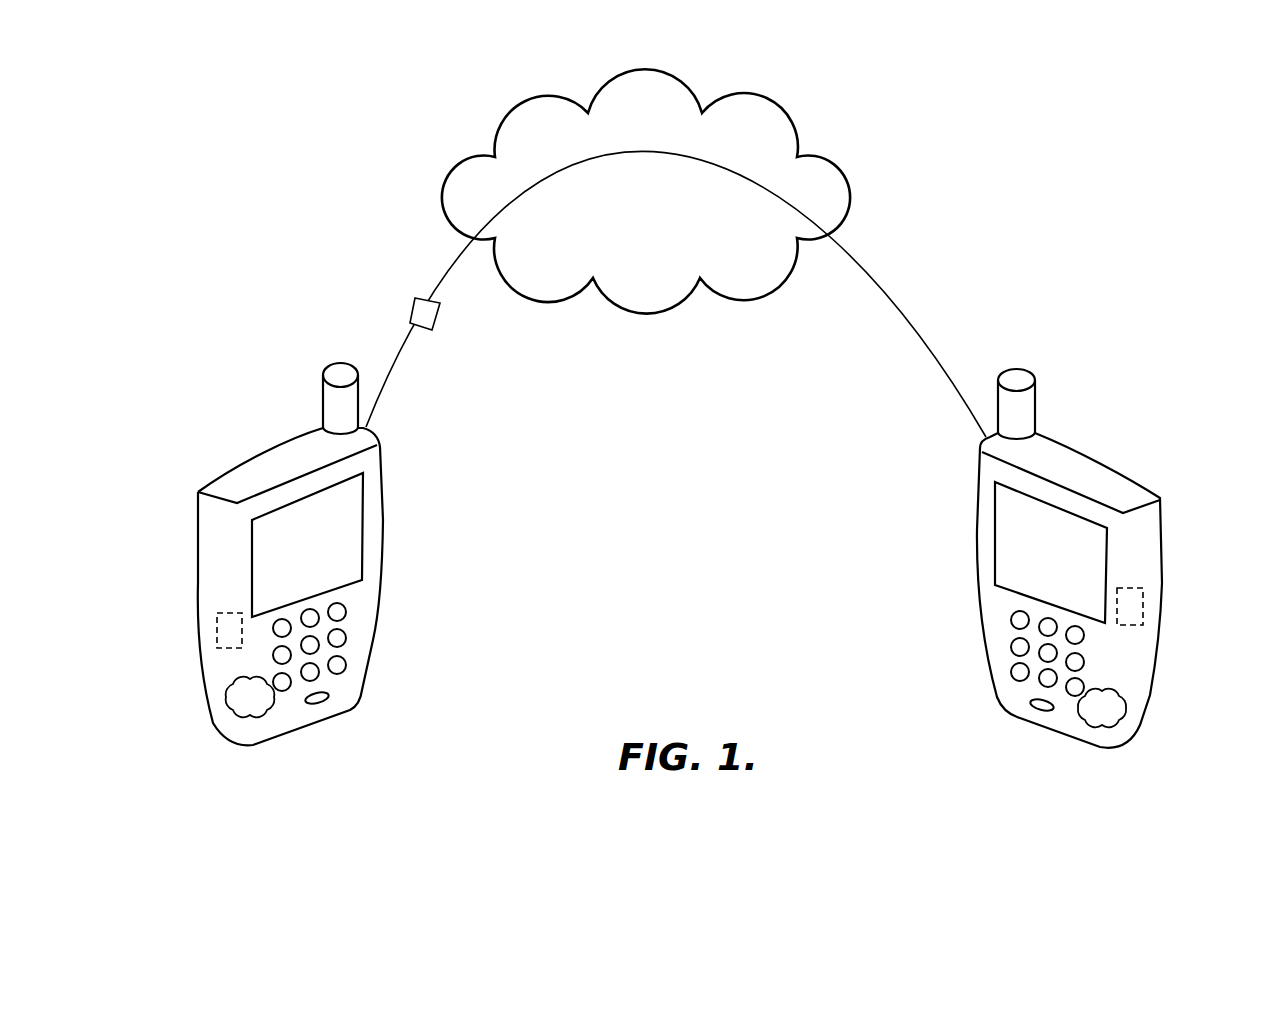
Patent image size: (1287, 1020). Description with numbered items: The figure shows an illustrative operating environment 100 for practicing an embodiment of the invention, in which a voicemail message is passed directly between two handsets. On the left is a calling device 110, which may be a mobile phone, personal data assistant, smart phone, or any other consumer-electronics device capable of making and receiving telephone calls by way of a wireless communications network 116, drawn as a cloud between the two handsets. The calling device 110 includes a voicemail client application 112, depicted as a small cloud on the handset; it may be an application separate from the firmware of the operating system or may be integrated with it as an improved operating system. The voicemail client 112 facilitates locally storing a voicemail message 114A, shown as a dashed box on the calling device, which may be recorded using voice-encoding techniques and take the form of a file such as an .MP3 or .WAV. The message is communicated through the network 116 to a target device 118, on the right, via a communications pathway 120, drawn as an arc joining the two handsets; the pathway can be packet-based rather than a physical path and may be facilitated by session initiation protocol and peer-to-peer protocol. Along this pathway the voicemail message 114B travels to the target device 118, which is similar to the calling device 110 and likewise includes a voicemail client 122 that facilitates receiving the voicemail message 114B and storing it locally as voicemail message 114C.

The operating environment 100 is at (1025, 140).
The calling device 110 is at (192, 545).
The voicemail client application 112 is at (242, 716).
The voicemail message 114A is at (217, 636).
The voicemail message 114B is at (432, 331).
The voicemail message 114C is at (1145, 601).
The wireless communications network 116 is at (442, 190).
The target device 118 is at (973, 558).
The communications pathway 120 is at (930, 353).
The voicemail client 122 is at (1088, 731).